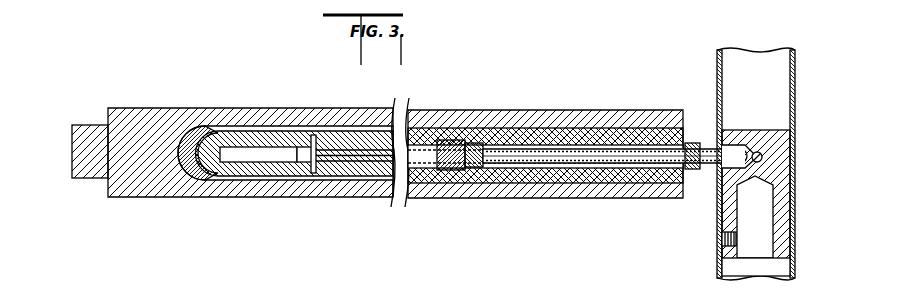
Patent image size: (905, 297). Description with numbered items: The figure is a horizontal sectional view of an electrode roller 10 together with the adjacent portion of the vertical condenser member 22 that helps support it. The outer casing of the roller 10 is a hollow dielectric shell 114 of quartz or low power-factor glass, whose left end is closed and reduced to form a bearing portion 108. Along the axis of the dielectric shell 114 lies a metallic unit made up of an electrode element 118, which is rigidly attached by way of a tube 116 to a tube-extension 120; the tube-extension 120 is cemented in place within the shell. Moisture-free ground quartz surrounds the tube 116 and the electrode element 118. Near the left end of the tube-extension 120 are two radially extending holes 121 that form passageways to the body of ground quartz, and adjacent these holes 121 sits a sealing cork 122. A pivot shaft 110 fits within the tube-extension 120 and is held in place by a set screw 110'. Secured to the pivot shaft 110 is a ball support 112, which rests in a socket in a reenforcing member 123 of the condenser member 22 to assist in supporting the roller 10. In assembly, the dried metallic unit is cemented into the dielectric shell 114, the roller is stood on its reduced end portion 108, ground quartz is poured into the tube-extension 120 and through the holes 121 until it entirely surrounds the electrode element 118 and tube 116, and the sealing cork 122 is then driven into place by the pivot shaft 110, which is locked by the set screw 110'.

The electrode roller 10 is at (158, 108).
The vertical condenser member 22 is at (717, 58).
The bearing portion 108 is at (90, 124).
The pivot shaft 110 is at (615, 189).
The set screw 110' is at (700, 131).
The ball support 112 is at (740, 141).
The dielectric shell 114 is at (425, 113).
The tube 116 is at (403, 200).
The electrode element 118 is at (258, 135).
The tube-extension 120 is at (578, 145).
The radially extending holes 121 is at (450, 170).
The sealing cork 122 is at (470, 148).
The reenforcing member 123 is at (775, 166).